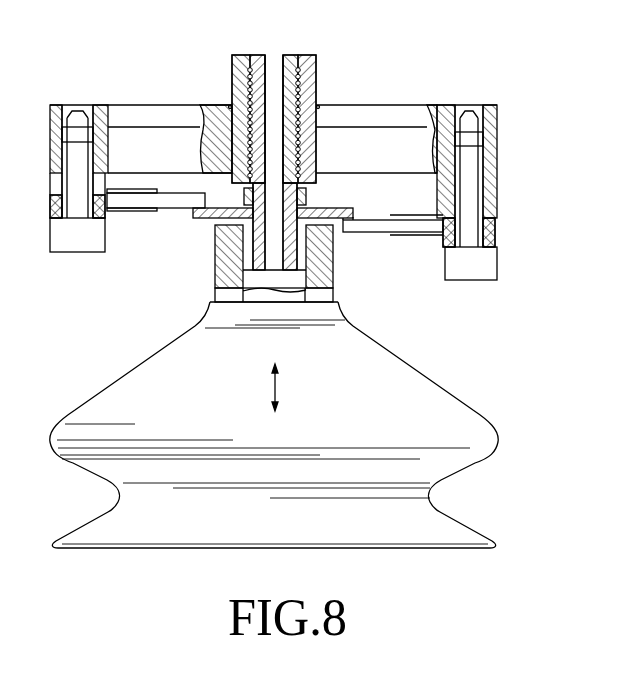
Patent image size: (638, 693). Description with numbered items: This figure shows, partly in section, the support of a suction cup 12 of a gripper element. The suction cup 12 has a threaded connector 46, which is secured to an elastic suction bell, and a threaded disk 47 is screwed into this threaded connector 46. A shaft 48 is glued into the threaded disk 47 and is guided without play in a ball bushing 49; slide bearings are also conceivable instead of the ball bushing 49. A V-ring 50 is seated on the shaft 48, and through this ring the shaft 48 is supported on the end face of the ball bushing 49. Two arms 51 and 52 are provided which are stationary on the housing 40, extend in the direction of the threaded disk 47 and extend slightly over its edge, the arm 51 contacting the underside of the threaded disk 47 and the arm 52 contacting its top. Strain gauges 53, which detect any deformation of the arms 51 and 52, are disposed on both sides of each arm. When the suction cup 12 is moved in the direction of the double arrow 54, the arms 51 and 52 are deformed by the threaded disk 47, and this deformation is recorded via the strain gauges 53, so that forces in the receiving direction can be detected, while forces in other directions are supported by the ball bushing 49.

The suction cup 12 is at (498, 436).
The housing 40 is at (497, 163).
The threaded connector 46 is at (213, 278).
The threaded disk 47 is at (195, 216).
The shaft 48 is at (281, 63).
The ball bushing 49 is at (318, 71).
The V-ring 50 is at (243, 197).
The arm 51 is at (378, 227).
The arm 52 is at (170, 205).
The strain gauges 53 is at (142, 186).
The double arrow 54 is at (277, 388).